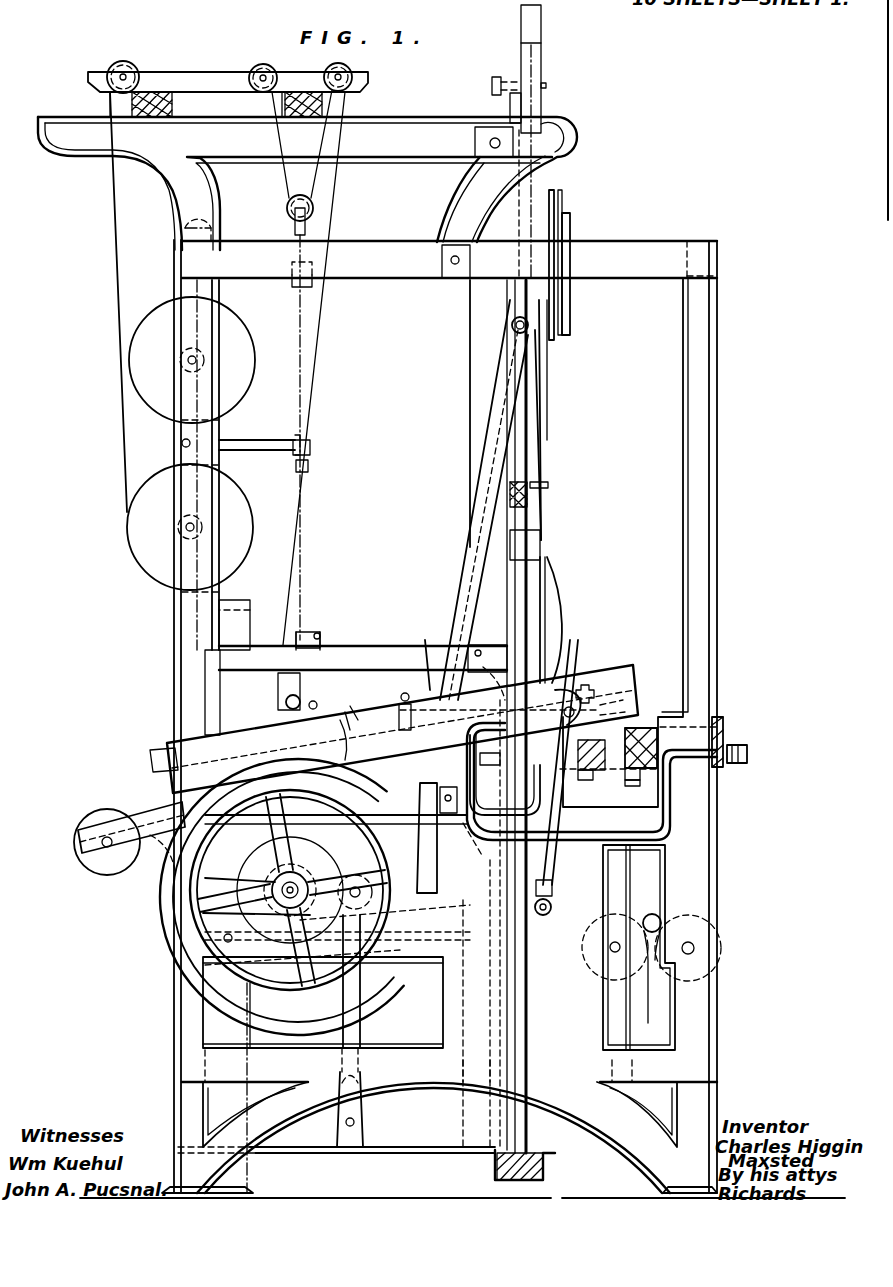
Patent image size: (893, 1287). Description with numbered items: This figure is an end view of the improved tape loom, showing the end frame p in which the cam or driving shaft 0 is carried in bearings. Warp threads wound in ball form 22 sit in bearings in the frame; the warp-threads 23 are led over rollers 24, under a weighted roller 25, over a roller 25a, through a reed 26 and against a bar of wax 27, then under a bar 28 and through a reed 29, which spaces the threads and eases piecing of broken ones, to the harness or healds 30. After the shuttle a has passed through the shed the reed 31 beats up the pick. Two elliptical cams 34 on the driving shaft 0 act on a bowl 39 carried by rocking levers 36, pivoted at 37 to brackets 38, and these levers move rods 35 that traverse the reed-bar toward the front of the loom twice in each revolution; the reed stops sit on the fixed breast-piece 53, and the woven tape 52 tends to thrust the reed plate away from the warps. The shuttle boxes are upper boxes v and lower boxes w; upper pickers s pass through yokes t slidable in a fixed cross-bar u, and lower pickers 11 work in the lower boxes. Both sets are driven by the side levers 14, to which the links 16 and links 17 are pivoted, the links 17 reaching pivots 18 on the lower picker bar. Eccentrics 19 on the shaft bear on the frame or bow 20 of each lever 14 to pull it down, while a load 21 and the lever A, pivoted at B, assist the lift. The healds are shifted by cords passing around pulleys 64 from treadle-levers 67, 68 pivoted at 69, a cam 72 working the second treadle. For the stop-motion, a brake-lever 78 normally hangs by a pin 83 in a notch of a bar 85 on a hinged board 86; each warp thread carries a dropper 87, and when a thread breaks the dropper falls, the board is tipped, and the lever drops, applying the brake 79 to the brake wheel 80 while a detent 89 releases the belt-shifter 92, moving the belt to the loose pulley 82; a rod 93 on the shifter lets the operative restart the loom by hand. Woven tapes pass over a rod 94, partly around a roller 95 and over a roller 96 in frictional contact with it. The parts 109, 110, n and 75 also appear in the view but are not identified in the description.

The rollers 24 is at (133, 66).
The roller 25a is at (352, 70).
The weighted roller 25 is at (287, 214).
The lever A is at (542, 48).
The pivot B is at (548, 86).
The plate 109 is at (557, 194).
The plate 110 is at (571, 230).
The warp-threads 23 is at (117, 284).
The ball of warp-threads 22 is at (240, 386).
The end frames p is at (719, 352).
The pickers s is at (542, 423).
The yokes t is at (548, 483).
The fixed cross-bar u is at (527, 497).
The upper shuttle-boxes v is at (541, 540).
The shuttle a is at (543, 578).
The spring n is at (565, 617).
The links or rods 16 is at (475, 546).
The brake-lever 78 is at (430, 680).
The bar of wax 27 is at (305, 632).
The reed 26 is at (322, 634).
The harness or healds 30 is at (500, 690).
The lower pickers 11 is at (560, 695).
The reed plate 31 is at (592, 688).
The levers 14 is at (628, 694).
The breast-piece 53 is at (657, 730).
The rod 94 is at (726, 718).
The rod 93 is at (747, 754).
The bar 28 is at (318, 703).
The bar 85 is at (365, 706).
The reed 29 is at (410, 701).
The hinged board 86 is at (352, 710).
The pin 83 is at (361, 739).
The pulleys 64 is at (488, 750).
The dropper 87 is at (286, 704).
The brake 79 is at (220, 735).
The load 21 is at (90, 816).
The link 75 is at (160, 848).
The elliptical cams 34 is at (265, 862).
The eccentrics 19 is at (290, 890).
The cam or driving shaft 0 is at (272, 888).
The brake pulley or wheel 80 is at (175, 922).
The pivot 69 is at (230, 940).
The loose pulley 82 is at (228, 965).
The bowl 39 is at (372, 892).
The frame or bow 20 is at (425, 860).
The detent 89 is at (480, 852).
The links 17 is at (556, 850).
The pivots 18 is at (556, 905).
The cam 72 is at (551, 910).
The lower shuttle-boxes w is at (535, 797).
The rods 35 is at (650, 775).
The belt-shifter 92 is at (672, 822).
The woven tape 52 is at (720, 825).
The rocking levers 36 is at (361, 1021).
The treadle-lever 67 is at (428, 985).
The treadle-lever 68 is at (428, 945).
The roller 96 is at (652, 914).
The roller 95 is at (722, 957).
The pivot 37 is at (355, 1120).
The brackets 38 is at (338, 1137).